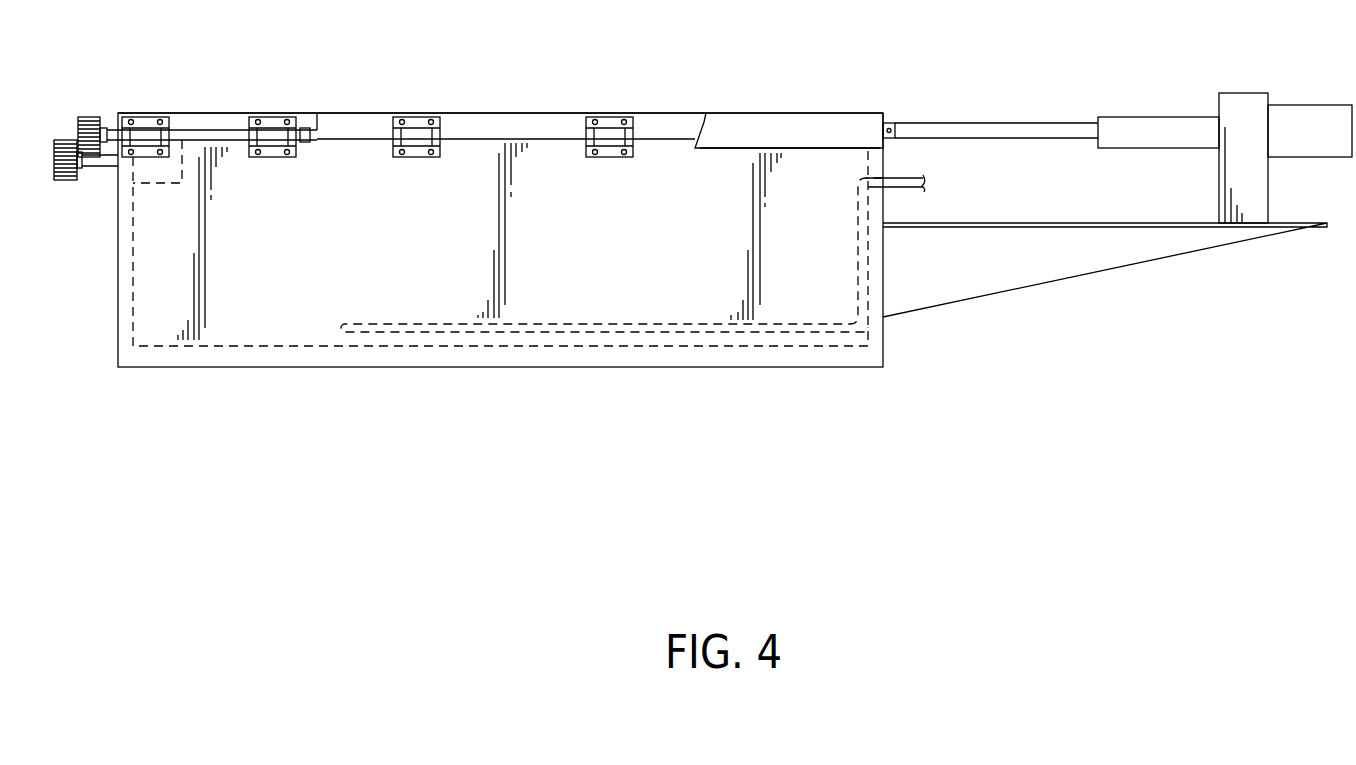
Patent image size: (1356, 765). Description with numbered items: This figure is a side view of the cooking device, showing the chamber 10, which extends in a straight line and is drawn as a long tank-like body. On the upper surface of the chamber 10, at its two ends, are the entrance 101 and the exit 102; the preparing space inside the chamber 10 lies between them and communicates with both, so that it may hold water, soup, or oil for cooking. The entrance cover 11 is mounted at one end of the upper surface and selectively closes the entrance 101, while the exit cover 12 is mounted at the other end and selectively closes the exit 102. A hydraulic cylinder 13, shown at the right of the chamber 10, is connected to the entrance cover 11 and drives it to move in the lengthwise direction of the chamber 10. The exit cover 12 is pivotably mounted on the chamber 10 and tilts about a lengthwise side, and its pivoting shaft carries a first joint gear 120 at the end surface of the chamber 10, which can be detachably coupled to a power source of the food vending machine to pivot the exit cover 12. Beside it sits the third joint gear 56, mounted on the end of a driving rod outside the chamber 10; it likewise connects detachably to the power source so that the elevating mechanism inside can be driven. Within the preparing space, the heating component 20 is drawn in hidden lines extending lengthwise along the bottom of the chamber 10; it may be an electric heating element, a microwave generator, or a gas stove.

The chamber 10 is at (500, 90).
The entrance cover 11 is at (766, 113).
The exit cover 12 is at (203, 117).
The hydraulic cylinder 13 is at (1303, 115).
The heating component 20 is at (786, 337).
The third joint gear 56 is at (64, 140).
The entrance 101 is at (800, 150).
The exit 102 is at (312, 137).
The first joint gear 120 is at (92, 117).